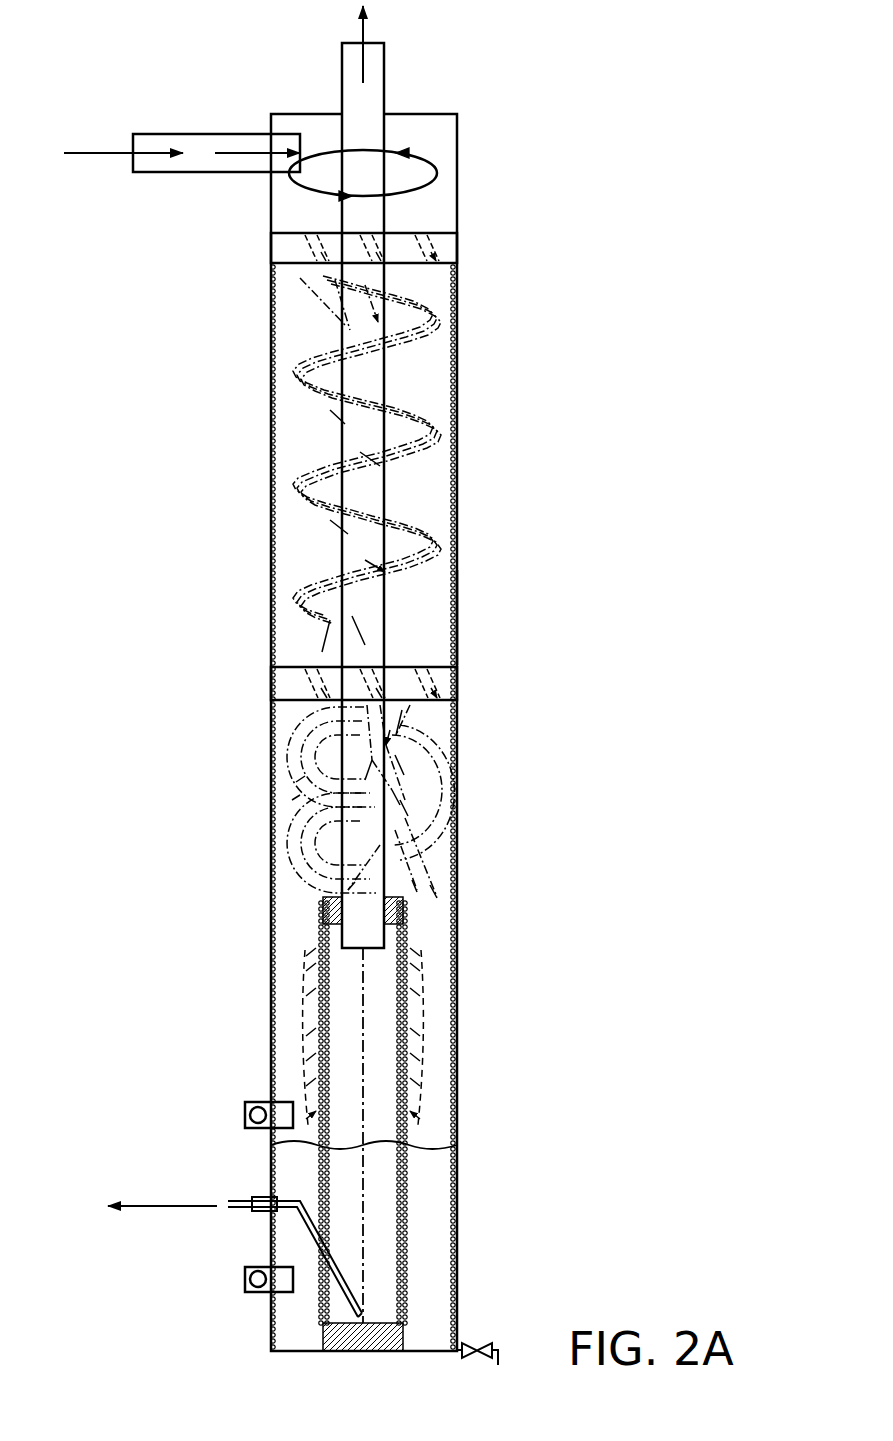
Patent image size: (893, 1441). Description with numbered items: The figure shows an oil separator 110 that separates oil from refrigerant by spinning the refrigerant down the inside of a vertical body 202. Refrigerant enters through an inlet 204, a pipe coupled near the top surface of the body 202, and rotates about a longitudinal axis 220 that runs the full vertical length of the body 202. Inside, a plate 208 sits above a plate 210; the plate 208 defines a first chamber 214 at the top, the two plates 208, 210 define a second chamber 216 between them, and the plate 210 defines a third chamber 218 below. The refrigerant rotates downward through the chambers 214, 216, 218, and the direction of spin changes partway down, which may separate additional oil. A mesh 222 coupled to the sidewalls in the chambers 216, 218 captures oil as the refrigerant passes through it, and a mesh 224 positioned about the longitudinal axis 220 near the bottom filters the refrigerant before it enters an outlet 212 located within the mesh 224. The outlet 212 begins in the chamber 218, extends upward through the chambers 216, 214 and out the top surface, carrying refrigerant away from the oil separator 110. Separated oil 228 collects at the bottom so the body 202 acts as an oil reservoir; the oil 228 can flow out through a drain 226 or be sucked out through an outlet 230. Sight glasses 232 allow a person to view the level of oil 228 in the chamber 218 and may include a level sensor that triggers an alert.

The oil separator 110 is at (431, 23).
The body 202 is at (457, 135).
The inlet 204 is at (160, 173).
The plate 208 is at (440, 243).
The plate 210 is at (430, 690).
The outlet 212 is at (385, 82).
The first chamber 214 is at (430, 200).
The second chamber 216 is at (428, 373).
The third chamber 218 is at (425, 770).
The longitudinal axis 220 is at (370, 1223).
The mesh 222 is at (456, 627).
The mesh 224 is at (410, 1016).
The drain 226 is at (490, 1344).
The oil 228 is at (425, 1266).
The outlet 230 is at (255, 1198).
The sight glasses 232 is at (245, 1106).